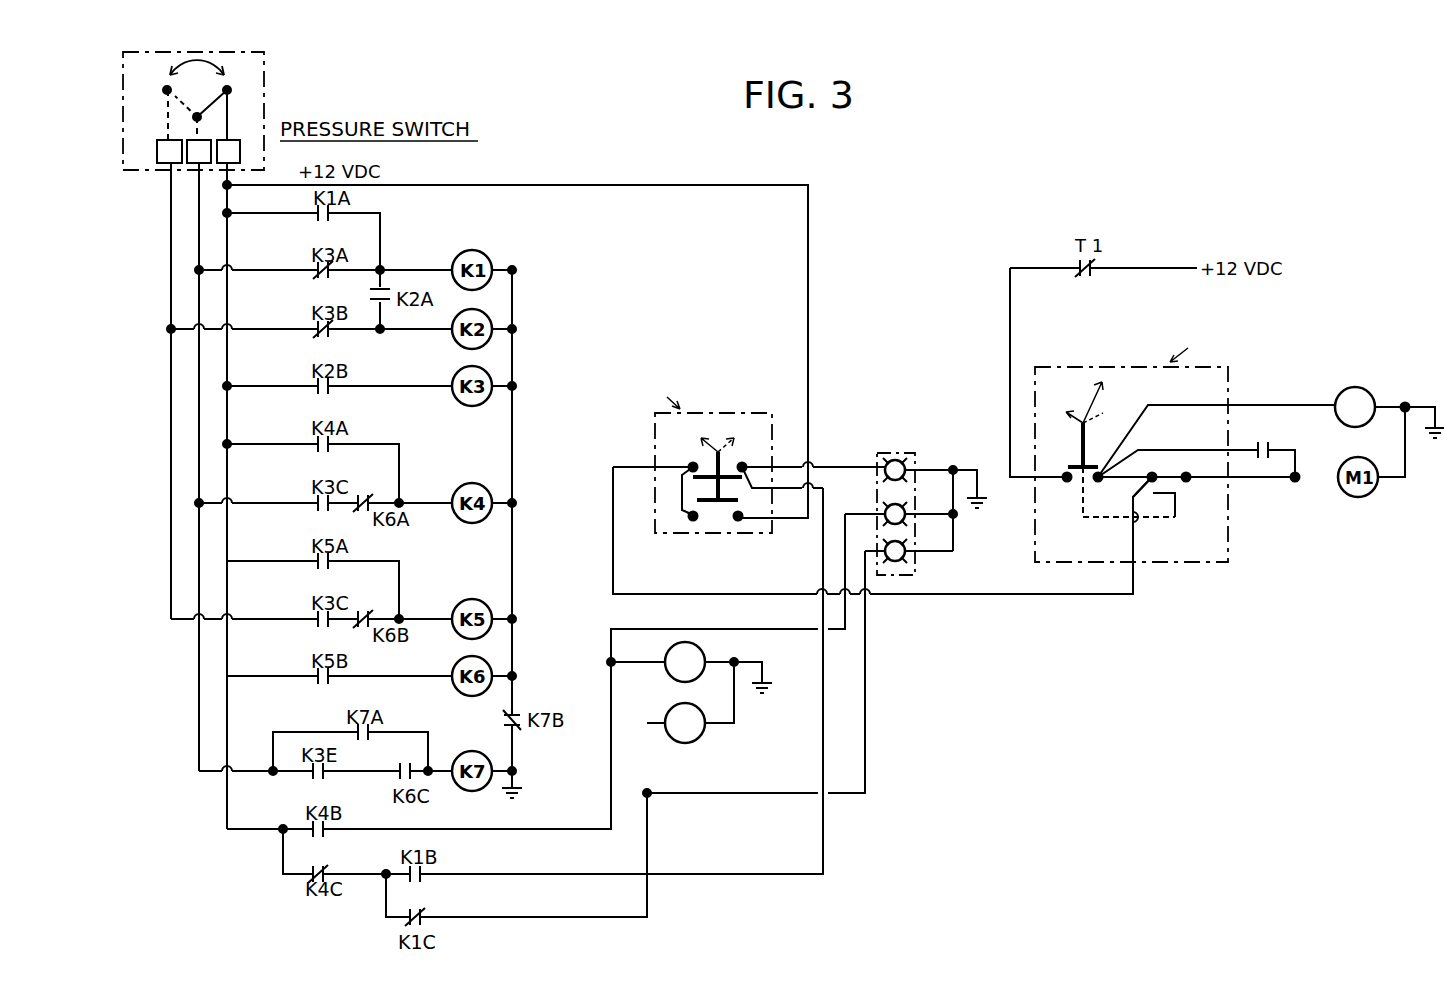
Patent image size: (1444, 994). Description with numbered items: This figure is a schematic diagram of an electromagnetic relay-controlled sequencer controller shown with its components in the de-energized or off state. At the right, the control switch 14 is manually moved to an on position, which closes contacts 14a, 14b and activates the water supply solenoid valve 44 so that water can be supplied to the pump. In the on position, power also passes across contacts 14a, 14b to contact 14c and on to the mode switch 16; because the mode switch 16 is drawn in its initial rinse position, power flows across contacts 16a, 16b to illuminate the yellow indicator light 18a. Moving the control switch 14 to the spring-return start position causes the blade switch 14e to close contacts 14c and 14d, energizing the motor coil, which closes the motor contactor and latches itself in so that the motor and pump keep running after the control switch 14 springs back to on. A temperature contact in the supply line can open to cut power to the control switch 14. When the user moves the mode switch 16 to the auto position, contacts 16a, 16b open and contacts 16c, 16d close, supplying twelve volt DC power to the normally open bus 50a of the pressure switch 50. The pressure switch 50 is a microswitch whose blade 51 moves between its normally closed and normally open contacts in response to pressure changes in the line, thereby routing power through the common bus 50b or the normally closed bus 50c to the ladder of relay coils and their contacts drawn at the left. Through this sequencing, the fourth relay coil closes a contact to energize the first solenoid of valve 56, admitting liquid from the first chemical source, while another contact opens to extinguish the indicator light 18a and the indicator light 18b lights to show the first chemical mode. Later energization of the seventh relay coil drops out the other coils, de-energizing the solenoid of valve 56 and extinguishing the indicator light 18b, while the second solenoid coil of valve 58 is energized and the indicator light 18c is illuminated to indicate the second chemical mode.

The pressure switch 50 is at (250, 52).
The blade switch 51 is at (207, 66).
The normally open bus 50a is at (251, 135).
The common bus 50b is at (205, 162).
The normally closed bus 50c is at (157, 152).
The mode switch 16 is at (737, 474).
The mode switch contact 16a is at (690, 465).
The mode switch contact 16b is at (746, 466).
The mode switch contact 16c is at (712, 524).
The mode switch contact 16d is at (742, 518).
The yellow indicator light 18a is at (916, 447).
The indicator light 18b is at (906, 520).
The indicator light 18c is at (905, 558).
The valve 56 is at (696, 649).
The valve 58 is at (700, 736).
The control switch 14 is at (1193, 455).
The control switch contact 14a is at (1067, 481).
The control switch contact 14b is at (1098, 481).
The control switch contact 14c is at (1158, 472).
The control switch contact 14d is at (1188, 481).
The blade switch 14e is at (1178, 498).
The water supply solenoid valve 44 is at (1372, 405).